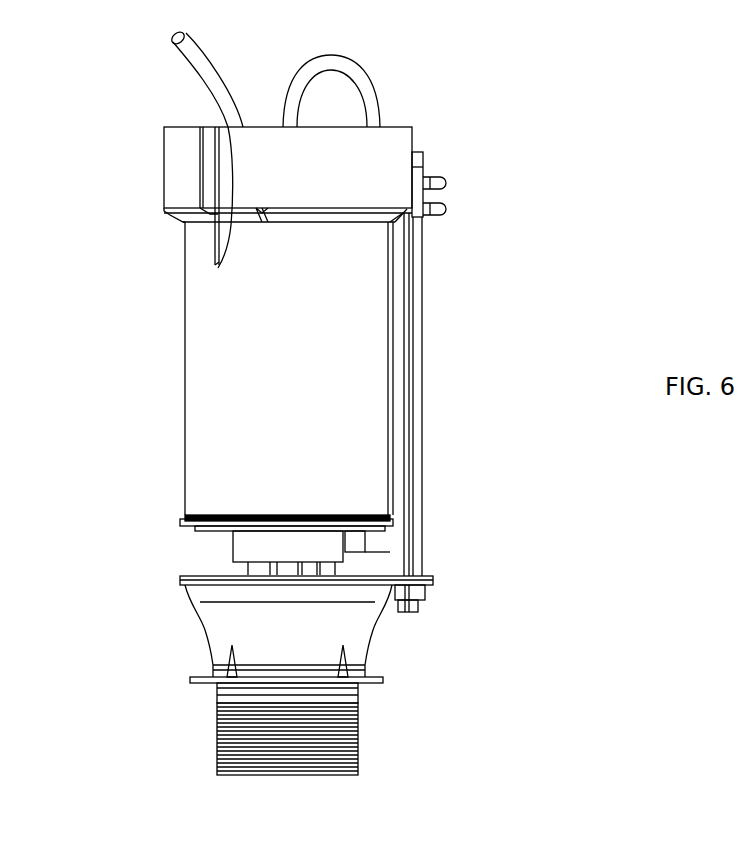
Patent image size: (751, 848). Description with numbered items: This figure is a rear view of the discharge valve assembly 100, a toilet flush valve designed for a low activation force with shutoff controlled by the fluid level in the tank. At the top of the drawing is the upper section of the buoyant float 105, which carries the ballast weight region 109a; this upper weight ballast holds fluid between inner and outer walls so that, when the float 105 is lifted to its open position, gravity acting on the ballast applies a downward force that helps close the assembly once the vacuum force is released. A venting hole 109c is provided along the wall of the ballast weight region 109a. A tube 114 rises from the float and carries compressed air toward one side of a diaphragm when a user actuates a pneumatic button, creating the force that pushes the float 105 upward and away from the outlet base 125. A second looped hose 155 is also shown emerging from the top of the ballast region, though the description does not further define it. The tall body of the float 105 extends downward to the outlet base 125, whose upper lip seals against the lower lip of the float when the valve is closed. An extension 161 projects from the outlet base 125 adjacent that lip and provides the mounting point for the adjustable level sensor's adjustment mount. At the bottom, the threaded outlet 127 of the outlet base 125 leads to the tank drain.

The discharge valve assembly 100 is at (512, 172).
The float 105 is at (207, 345).
The ballast weight region 109a is at (406, 125).
The venting hole 109c is at (262, 207).
The tube 114 is at (207, 71).
The outlet base 125 is at (358, 628).
The outlet 127 is at (328, 774).
The hose loop 155 is at (360, 70).
The extension 161 is at (432, 582).